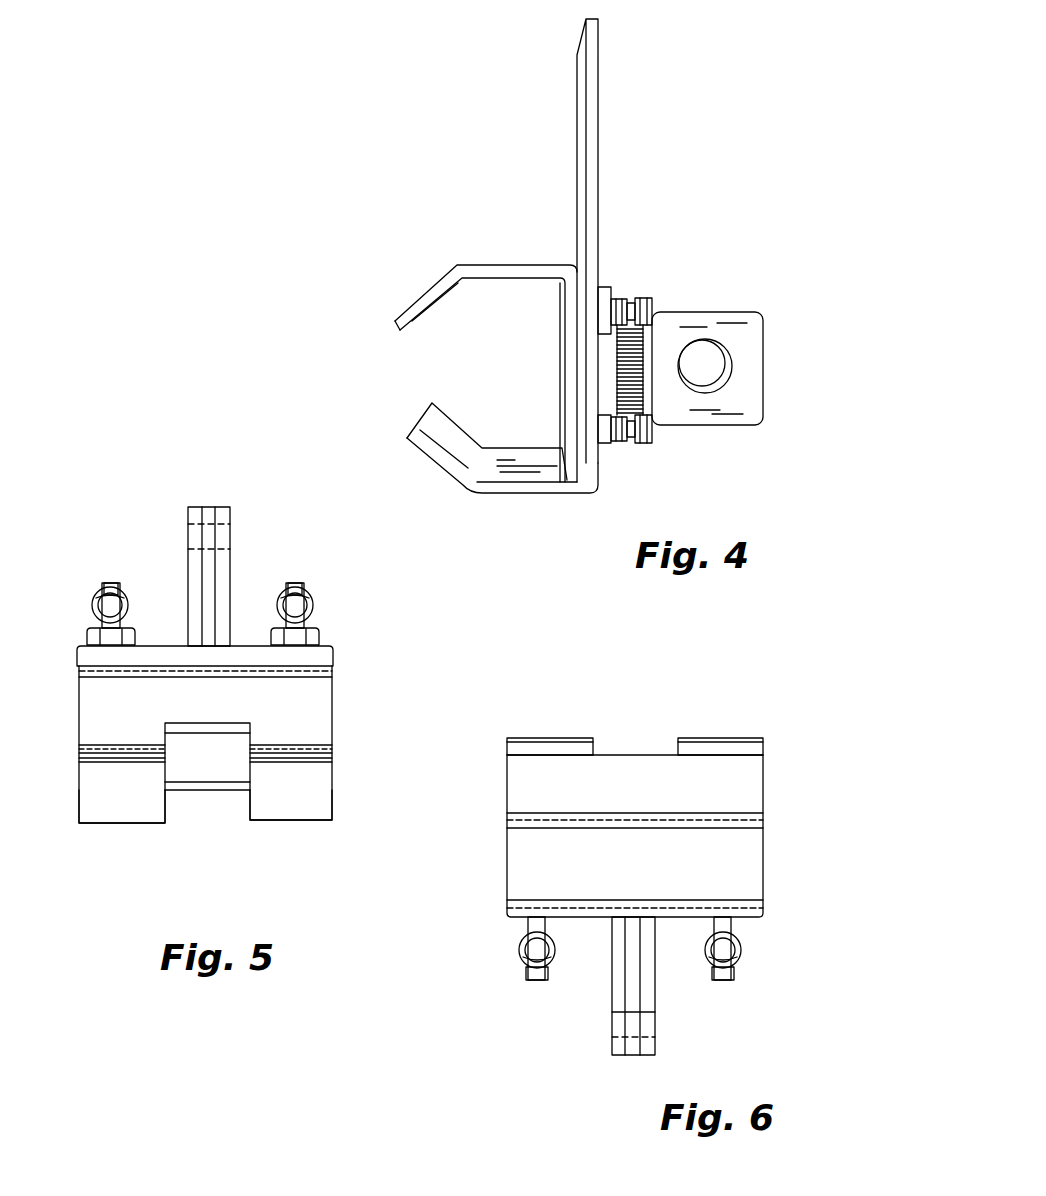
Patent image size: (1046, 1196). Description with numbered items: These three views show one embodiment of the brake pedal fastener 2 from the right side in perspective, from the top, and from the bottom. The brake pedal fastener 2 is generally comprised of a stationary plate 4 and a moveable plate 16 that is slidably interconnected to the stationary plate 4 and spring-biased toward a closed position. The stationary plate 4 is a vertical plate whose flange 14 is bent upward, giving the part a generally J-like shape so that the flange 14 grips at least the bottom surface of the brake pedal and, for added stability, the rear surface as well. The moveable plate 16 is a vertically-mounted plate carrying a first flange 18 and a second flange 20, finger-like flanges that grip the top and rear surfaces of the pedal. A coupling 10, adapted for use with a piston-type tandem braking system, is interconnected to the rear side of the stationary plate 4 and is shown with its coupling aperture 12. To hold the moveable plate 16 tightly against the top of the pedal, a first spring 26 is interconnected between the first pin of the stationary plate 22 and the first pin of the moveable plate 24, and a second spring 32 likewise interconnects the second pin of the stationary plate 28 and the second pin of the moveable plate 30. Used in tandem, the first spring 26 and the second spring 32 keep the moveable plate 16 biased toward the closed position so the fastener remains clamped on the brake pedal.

In FIG. 4, the brake pedal fastener 2 is at (737, 211).
In FIG. 5, the brake pedal fastener 2 is at (372, 796).
In FIG. 6, the brake pedal fastener 2 is at (786, 751).
In FIG. 4, the stationary plate 4 is at (598, 85).
In FIG. 4, the coupling 10 is at (738, 345).
In FIG. 6, the coupling 10 is at (630, 1006).
In FIG. 4, the coupling aperture 12 is at (716, 345).
In FIG. 5, the coupling aperture 12 is at (230, 540).
In FIG. 6, the coupling aperture 12 is at (655, 1025).
In FIG. 5, the flange of stationary plate 14 is at (218, 792).
In FIG. 6, the flange of stationary plate 14 is at (763, 848).
In FIG. 4, the movable plate 16 is at (522, 265).
In FIG. 5, the first flange 18 is at (320, 823).
In FIG. 6, the first flange 18 is at (723, 738).
In FIG. 5, the second flange 20 is at (128, 823).
In FIG. 6, the second flange 20 is at (557, 738).
In FIG. 4, the first pin of stationary plate 22 is at (647, 445).
In FIG. 6, the first pin of stationary plate 22 is at (728, 983).
In FIG. 4, the first pin of movable plate 24 is at (645, 297).
In FIG. 5, the first pin of movable plate 24 is at (298, 585).
In FIG. 4, the first spring 26 is at (643, 383).
In FIG. 5, the first spring 26 is at (313, 605).
In FIG. 6, the first spring 26 is at (745, 958).
In FIG. 6, the second pin of stationary plate 28 is at (537, 983).
In FIG. 5, the second pin of movable plate 30 is at (112, 585).
In FIG. 5, the second spring 32 is at (94, 600).
In FIG. 6, the second spring 32 is at (514, 958).